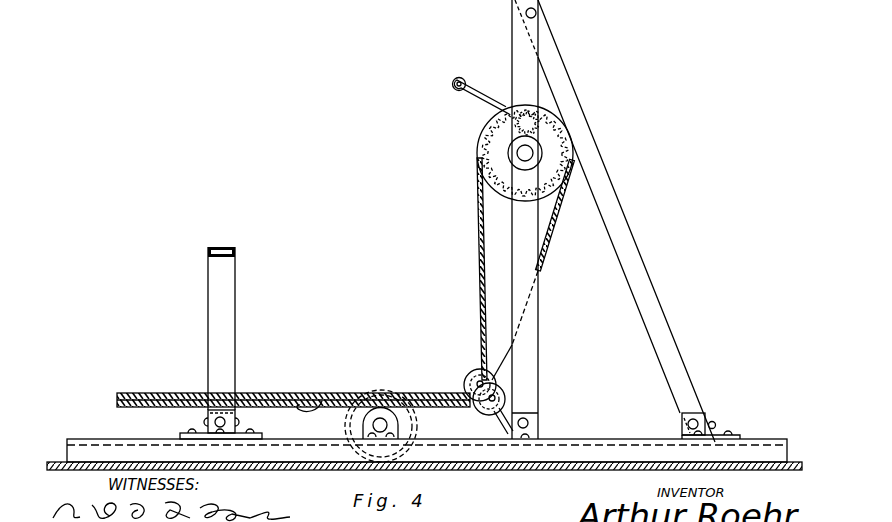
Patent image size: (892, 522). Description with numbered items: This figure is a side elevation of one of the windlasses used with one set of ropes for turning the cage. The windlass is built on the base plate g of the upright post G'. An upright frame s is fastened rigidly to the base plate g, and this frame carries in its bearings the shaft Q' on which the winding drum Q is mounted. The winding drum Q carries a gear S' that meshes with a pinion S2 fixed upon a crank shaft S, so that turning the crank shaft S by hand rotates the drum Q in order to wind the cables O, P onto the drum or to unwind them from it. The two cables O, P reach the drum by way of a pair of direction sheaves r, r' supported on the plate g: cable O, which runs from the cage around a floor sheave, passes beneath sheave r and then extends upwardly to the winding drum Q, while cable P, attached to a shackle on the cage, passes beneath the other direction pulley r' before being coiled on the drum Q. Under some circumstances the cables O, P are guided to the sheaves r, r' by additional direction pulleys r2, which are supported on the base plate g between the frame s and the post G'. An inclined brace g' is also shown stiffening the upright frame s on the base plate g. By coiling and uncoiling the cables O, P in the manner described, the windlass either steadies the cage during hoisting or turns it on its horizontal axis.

The base plate g is at (424, 473).
The upright frame s is at (532, 316).
The inclined brace g' is at (639, 221).
The winding drum Q is at (501, 153).
The shaft Q' is at (575, 149).
The pinion S2 is at (537, 122).
The crank shaft S is at (482, 85).
The gear S' is at (506, 296).
The direction sheave r is at (470, 371).
The direction pulley r' is at (465, 393).
The cable O is at (257, 395).
The cable P is at (323, 399).
The post G' is at (229, 343).
The direction pulleys r2 is at (382, 392).